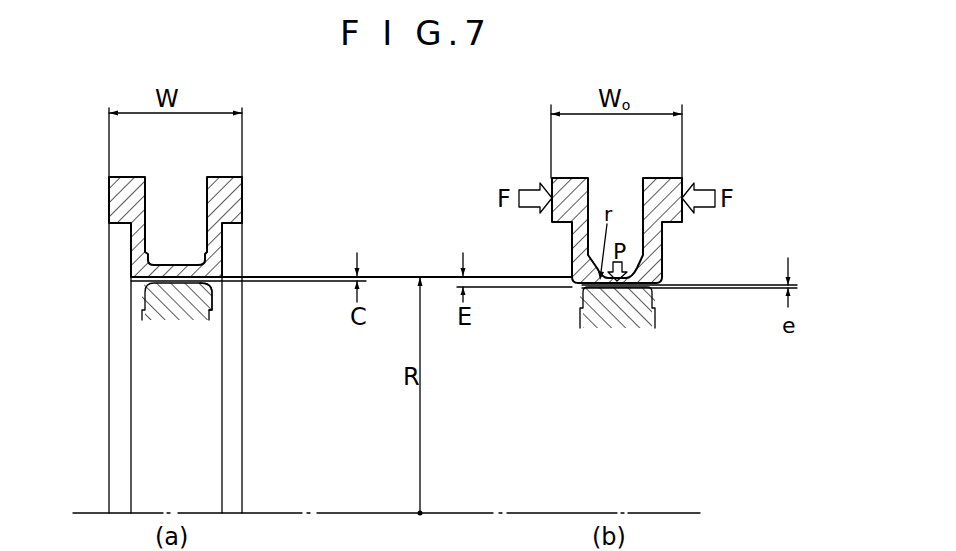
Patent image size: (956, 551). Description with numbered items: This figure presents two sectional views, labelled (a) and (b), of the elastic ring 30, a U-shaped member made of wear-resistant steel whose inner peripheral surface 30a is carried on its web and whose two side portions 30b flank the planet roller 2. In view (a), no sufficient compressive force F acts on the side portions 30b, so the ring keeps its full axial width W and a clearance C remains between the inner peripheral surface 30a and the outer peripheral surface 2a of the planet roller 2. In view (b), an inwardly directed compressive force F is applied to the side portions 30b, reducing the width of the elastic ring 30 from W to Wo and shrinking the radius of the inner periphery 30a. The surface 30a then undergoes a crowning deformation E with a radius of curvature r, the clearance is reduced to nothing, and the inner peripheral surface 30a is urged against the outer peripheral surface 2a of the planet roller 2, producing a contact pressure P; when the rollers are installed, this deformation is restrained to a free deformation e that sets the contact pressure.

The planet roller 2 is at (147, 308).
The outer peripheral surface of planet roller 2a is at (193, 297).
The elastic ring 30 is at (120, 185).
The inner peripheral surface 30a is at (145, 266).
The side portion 30b is at (108, 197).